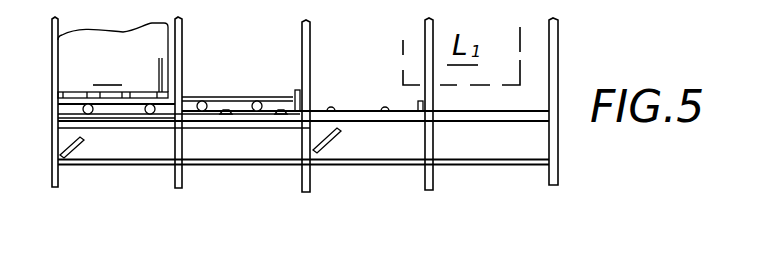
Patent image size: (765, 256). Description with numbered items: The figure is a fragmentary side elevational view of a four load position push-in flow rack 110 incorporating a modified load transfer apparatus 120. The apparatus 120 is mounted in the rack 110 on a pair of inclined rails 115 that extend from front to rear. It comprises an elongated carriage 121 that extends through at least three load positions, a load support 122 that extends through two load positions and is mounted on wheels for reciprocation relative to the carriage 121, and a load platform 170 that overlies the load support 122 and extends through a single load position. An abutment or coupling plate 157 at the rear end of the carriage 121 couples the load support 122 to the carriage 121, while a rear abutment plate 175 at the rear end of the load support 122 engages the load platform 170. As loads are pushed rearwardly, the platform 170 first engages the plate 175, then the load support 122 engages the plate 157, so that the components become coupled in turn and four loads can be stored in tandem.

The rack 110 is at (185, 168).
The inclined rails 115 is at (368, 120).
The load transfer apparatus 120 is at (155, 173).
The carriage 121 is at (247, 113).
The load support 122 is at (283, 87).
The abutment or coupling plate 157 is at (417, 109).
The load platform 170 is at (128, 97).
The rear abutment plate 175 is at (298, 90).